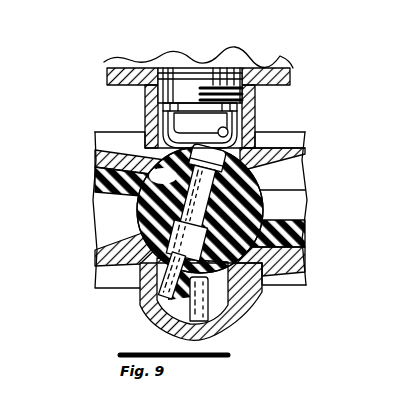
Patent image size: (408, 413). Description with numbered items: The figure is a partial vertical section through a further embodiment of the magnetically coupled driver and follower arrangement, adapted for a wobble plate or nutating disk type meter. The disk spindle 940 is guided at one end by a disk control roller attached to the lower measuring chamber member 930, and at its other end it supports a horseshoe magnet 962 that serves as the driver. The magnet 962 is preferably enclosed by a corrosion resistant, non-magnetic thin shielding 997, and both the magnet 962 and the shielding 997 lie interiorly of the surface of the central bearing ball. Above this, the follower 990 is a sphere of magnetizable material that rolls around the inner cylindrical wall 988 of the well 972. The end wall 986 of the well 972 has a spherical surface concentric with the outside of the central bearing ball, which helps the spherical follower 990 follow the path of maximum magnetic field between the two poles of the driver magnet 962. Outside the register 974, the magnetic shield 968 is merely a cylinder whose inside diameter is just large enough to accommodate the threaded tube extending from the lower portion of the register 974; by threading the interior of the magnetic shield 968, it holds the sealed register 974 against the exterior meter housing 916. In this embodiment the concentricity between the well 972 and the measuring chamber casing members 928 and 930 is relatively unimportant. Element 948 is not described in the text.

The exterior meter housing 916 is at (107, 72).
The magnetic shield 968 is at (143, 98).
The inner cylindrical wall 988 is at (152, 128).
The end wall 986 is at (182, 137).
The register 974 is at (222, 56).
The well 972 is at (238, 113).
The follower 990 is at (226, 131).
The shielding 997 is at (280, 139).
The measuring chamber casing member 928 is at (305, 151).
The horseshoe magnet 962 is at (255, 171).
The disk spindle 940 is at (256, 208).
The lower measuring chamber member 930 is at (258, 296).
The pin 948 is at (190, 388).